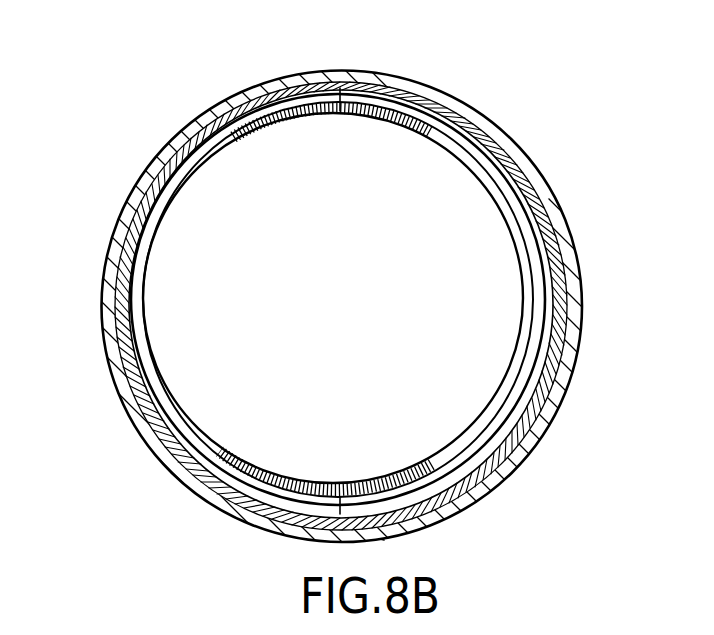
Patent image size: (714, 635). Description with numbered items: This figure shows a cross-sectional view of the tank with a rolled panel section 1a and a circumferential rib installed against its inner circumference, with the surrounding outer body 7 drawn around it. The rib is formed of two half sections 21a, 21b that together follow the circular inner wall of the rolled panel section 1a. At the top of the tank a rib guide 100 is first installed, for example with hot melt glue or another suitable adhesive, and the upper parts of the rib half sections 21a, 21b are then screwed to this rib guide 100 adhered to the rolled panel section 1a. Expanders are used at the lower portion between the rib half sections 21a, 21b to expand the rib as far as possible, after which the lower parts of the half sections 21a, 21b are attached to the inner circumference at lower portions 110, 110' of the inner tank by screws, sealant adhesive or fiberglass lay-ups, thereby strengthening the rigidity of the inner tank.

The pipe 7 is at (515, 150).
The rolled panel section 1a is at (477, 128).
The rib half section 21a is at (172, 195).
The rib half section 21b is at (545, 279).
The rib guide 100 is at (323, 86).
The lower portion of inner tank 110 is at (271, 555).
The lower portion of inner tank 110' is at (488, 542).